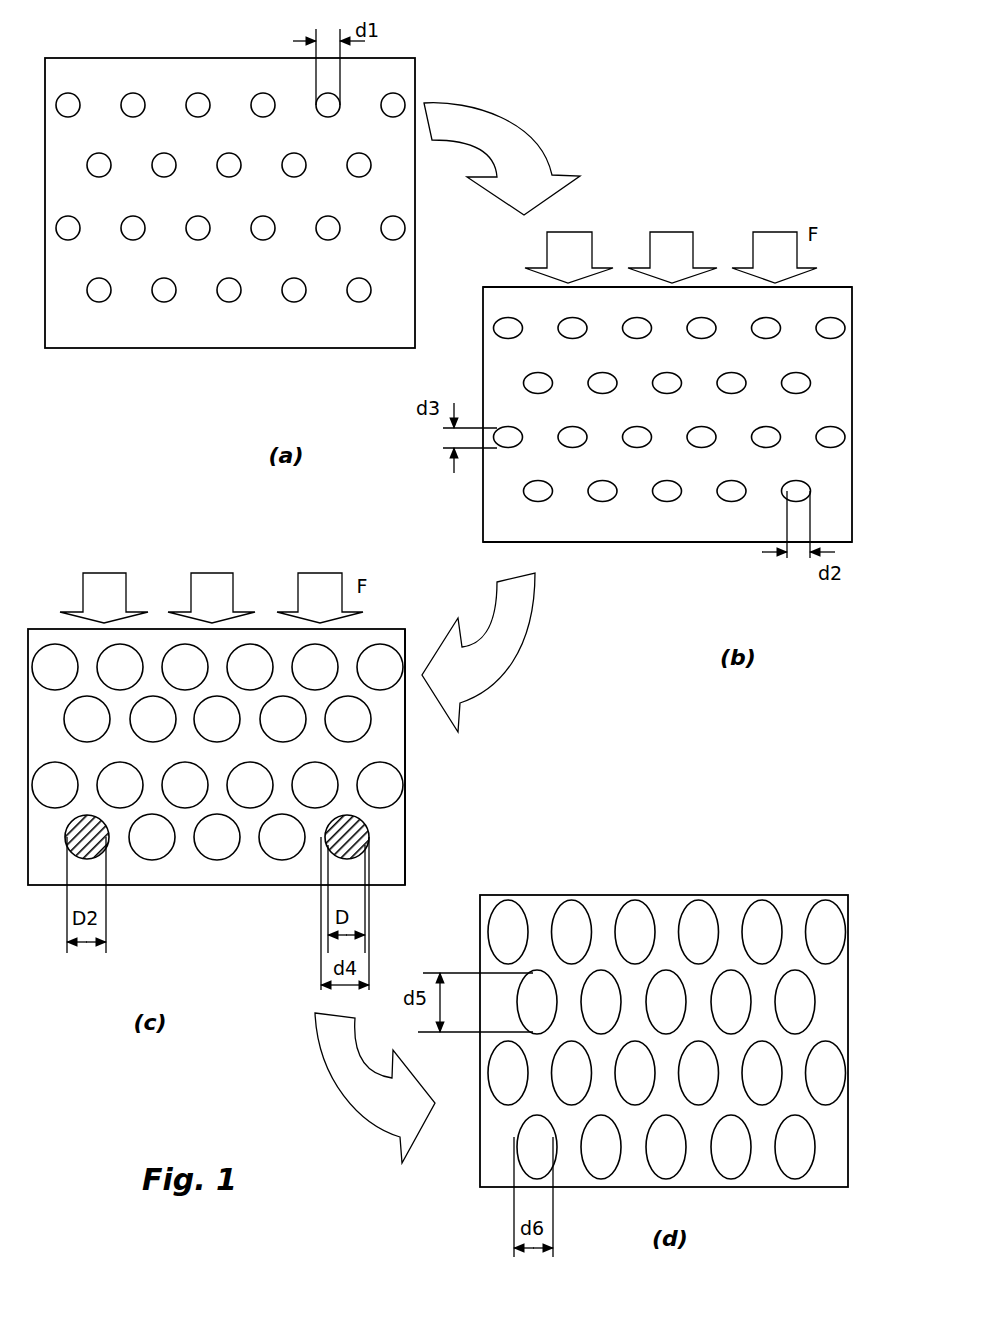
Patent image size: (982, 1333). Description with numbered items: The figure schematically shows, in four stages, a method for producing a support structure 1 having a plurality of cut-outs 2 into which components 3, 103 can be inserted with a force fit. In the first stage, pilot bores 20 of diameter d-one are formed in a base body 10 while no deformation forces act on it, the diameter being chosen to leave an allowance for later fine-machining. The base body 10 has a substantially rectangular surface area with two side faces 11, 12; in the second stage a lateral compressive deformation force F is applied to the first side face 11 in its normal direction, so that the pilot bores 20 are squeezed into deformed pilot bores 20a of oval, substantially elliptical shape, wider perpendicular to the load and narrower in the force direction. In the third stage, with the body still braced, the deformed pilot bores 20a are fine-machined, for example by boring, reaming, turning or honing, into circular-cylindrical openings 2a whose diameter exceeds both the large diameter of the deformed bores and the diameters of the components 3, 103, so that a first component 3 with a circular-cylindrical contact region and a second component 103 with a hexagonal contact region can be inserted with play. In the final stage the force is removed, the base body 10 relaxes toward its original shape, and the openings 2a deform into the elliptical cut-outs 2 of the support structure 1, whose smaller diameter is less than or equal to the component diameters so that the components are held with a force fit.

The support structure 1 is at (728, 853).
The cut-outs 2 is at (628, 903).
The openings 2a is at (270, 860).
The component 3 is at (367, 823).
The base body 10 is at (470, 52).
The first side face 11 is at (498, 287).
The second side face 12 is at (483, 507).
The pilot bores 20 is at (140, 94).
The deformed pilot bores 20a is at (663, 499).
The second component 103 is at (107, 823).